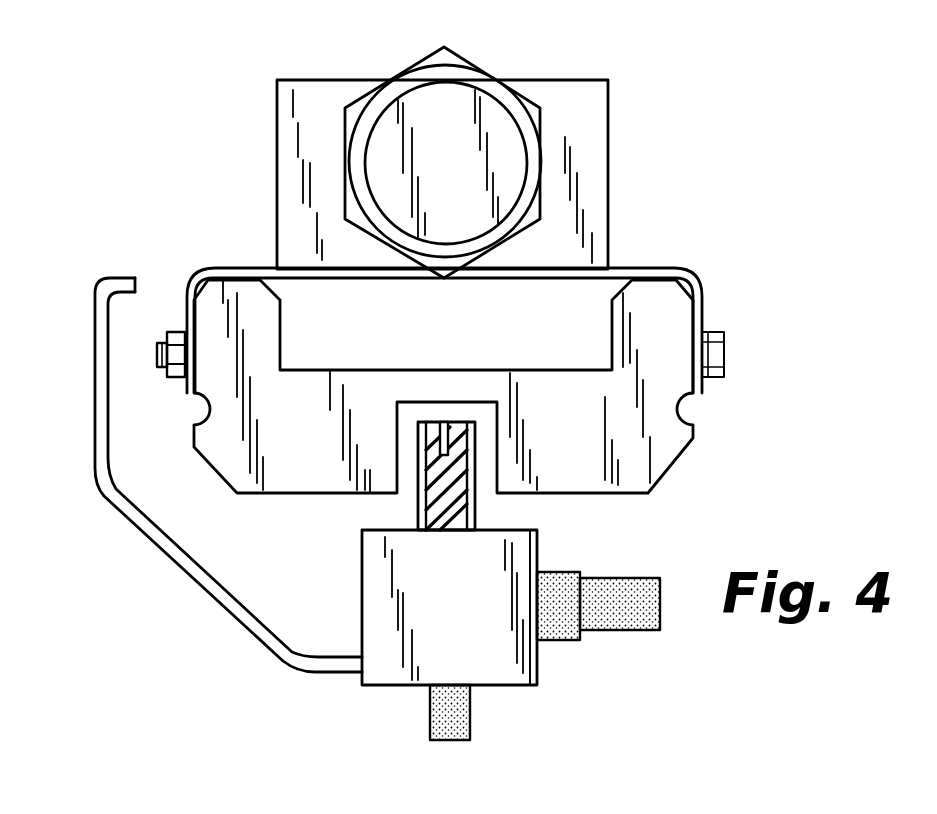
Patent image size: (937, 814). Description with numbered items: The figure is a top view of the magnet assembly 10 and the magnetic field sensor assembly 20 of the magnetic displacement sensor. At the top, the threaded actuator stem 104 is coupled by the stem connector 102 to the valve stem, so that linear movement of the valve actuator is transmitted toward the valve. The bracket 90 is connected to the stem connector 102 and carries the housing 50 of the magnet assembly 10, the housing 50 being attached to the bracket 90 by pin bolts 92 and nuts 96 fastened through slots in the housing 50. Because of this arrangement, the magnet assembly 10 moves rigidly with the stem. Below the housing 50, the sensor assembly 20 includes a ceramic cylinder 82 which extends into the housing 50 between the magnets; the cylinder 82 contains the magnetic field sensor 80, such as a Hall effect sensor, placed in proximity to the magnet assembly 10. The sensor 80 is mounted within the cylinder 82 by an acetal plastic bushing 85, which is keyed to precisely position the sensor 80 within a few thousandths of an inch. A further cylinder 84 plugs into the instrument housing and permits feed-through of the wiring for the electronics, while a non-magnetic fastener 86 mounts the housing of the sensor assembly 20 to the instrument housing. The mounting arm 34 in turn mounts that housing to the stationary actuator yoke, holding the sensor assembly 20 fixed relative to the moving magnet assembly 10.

The movable magnet assembly 10 is at (690, 465).
The magnetic field sensor assembly 20 is at (530, 695).
The mounting arm 34 is at (215, 600).
The housing 50 is at (693, 437).
The magnetic field sensor 80 is at (433, 425).
The ceramic cylinder 82 is at (477, 512).
The cylinder 84 is at (607, 633).
The acetal plastic bushing 85 is at (418, 510).
The non-magnetic fastener 86 is at (447, 740).
The bracket 90 is at (652, 267).
The pin bolt 92 is at (167, 337).
The nut 96 is at (182, 332).
The stem connector 102 is at (608, 115).
The actuator stem 104 is at (443, 110).